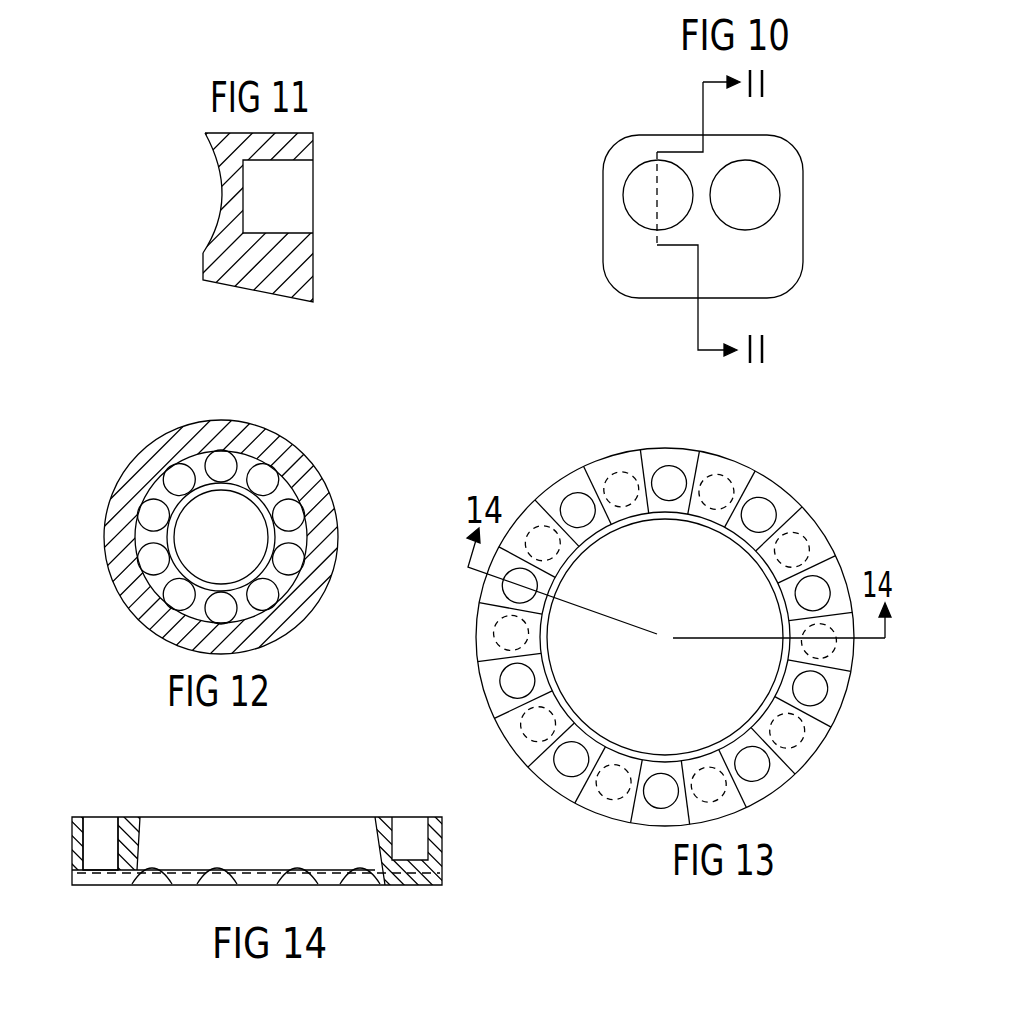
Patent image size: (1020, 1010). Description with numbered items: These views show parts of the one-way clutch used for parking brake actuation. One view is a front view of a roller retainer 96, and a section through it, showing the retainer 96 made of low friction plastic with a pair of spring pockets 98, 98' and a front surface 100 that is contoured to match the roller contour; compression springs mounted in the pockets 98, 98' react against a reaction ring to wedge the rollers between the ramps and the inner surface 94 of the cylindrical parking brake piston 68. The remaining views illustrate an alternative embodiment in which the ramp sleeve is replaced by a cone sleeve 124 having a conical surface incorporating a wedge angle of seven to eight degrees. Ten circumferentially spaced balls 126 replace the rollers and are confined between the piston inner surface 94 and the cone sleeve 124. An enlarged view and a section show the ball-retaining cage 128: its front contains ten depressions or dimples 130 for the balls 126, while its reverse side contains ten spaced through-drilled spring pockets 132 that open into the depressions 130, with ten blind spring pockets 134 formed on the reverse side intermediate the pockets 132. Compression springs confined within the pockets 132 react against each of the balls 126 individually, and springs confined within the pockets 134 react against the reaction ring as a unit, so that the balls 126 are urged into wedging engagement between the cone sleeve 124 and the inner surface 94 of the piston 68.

In FIG. 12, the parking brake piston 68 is at (258, 432).
In FIG. 12, the inner surface of piston 94 is at (193, 457).
In FIG. 10, the retainer 96 is at (780, 160).
In FIG. 11, the retainer 96 is at (292, 145).
In FIG. 10, the spring pocket 98 is at (658, 157).
In FIG. 11, the spring pocket 98 is at (311, 196).
In FIG. 10, the spring pocket 98' is at (790, 195).
In FIG. 11, the front surface 100 is at (222, 197).
In FIG. 12, the cone sleeve 124 is at (243, 517).
In FIG. 12, the balls 126 is at (150, 558).
In FIG. 13, the ball-retaining cage 128 is at (708, 452).
In FIG. 14, the ball-retaining cage 128 is at (443, 848).
In FIG. 13, the depressions 130 is at (662, 463).
In FIG. 14, the depressions 130 is at (208, 878).
In FIG. 13, the through-drilled spring pockets 132 is at (590, 515).
In FIG. 14, the through-drilled spring pockets 132 is at (114, 825).
In FIG. 13, the blind spring pockets 134 is at (738, 458).
In FIG. 14, the blind spring pockets 134 is at (400, 826).